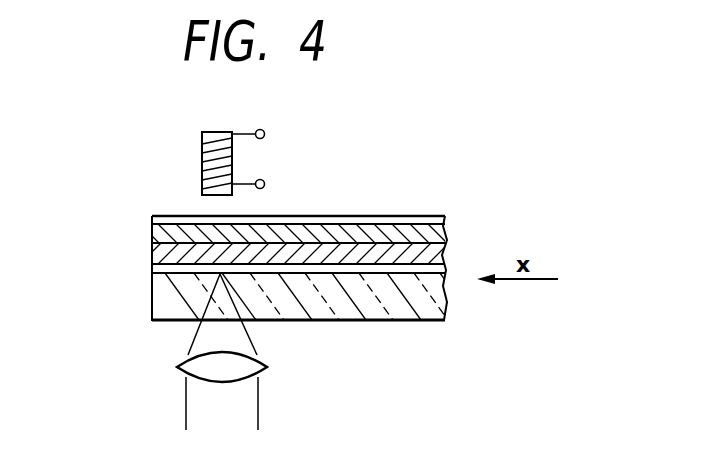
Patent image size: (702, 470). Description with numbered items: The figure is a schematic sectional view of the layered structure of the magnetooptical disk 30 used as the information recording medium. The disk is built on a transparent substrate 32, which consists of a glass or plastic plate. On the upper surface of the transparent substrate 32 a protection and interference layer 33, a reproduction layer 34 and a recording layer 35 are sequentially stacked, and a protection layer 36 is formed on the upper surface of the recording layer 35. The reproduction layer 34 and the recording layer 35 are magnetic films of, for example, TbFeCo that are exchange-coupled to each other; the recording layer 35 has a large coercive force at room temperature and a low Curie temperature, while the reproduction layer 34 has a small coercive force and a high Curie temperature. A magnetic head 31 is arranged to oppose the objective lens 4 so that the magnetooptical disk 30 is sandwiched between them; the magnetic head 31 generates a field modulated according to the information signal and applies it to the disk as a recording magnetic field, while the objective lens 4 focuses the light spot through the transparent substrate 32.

The objective lens 4 is at (268, 368).
The magnetooptical disk 30 is at (85, 335).
The magnetic head 31 is at (250, 162).
The transparent substrate 32 is at (170, 295).
The protection and interference layer 33 is at (152, 270).
The reproduction layer 34 is at (152, 254).
The recording layer 35 is at (152, 234).
The protection layer 36 is at (152, 219).